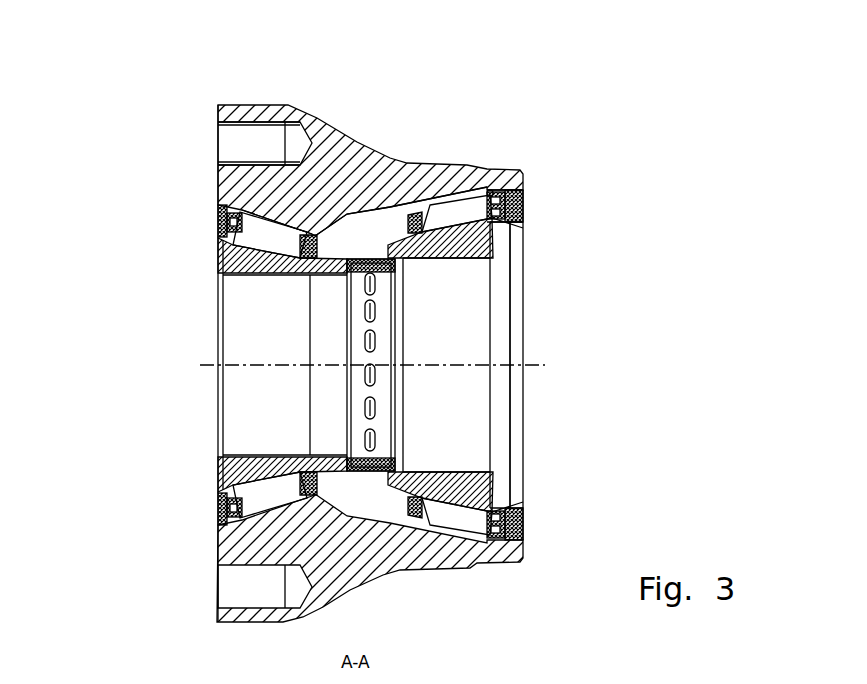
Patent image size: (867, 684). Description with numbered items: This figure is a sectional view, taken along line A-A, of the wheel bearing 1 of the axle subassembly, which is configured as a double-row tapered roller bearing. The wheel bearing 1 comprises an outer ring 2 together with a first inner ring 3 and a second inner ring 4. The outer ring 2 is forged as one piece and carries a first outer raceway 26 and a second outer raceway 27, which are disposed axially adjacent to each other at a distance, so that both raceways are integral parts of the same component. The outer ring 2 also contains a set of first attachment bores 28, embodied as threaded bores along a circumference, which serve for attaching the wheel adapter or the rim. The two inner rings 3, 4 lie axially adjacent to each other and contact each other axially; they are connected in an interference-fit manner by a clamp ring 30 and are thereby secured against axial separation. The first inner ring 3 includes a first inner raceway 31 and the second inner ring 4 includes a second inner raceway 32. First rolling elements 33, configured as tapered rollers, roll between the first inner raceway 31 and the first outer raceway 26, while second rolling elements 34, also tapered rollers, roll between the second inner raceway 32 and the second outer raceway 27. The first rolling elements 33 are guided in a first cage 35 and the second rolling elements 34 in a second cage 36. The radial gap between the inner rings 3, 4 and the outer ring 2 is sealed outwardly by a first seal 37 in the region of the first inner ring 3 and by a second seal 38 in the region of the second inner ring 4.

The wheel bearing 1 is at (187, 89).
The outer ring 2 is at (523, 178).
The first inner ring 3 is at (221, 252).
The second inner ring 4 is at (526, 232).
The first outer raceway 26 is at (360, 158).
The second outer raceway 27 is at (500, 183).
The first attachment bores 28 is at (217, 150).
The clamp ring 30 is at (393, 440).
The first inner raceway 31 is at (250, 248).
The second inner raceway 32 is at (490, 250).
The first rolling elements 33 is at (278, 240).
The second rolling elements 34 is at (497, 245).
The first cage 35 is at (395, 162).
The second cage 36 is at (432, 198).
The first seal 37 is at (217, 215).
The second seal 38 is at (524, 203).